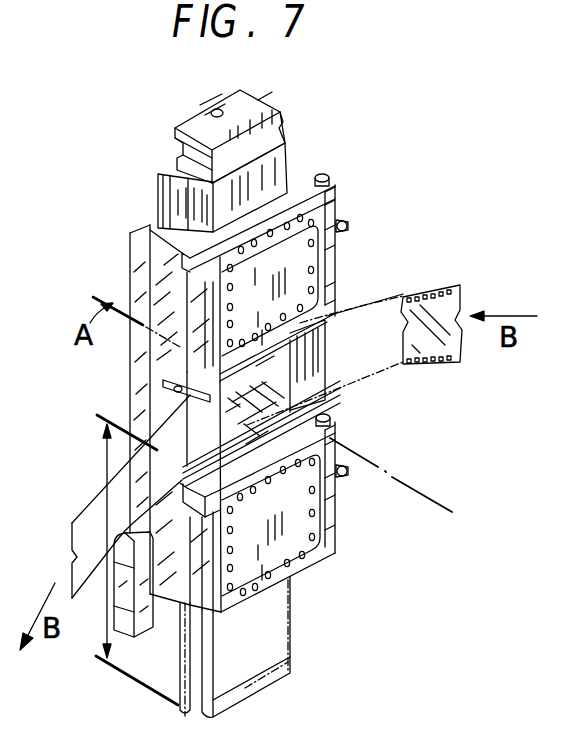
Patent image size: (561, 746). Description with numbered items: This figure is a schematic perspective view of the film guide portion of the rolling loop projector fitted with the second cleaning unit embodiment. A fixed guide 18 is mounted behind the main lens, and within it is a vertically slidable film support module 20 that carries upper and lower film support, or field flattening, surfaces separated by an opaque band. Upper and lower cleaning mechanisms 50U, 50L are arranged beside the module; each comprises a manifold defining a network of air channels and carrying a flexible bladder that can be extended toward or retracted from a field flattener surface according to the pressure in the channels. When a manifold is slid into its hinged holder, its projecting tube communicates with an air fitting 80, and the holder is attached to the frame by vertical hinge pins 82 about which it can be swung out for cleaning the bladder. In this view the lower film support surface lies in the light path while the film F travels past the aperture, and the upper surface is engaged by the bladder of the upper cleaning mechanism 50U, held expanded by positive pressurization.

The fixed guide 18 is at (133, 357).
The film support module 20 is at (283, 104).
The upper cleaning mechanism 50U is at (338, 267).
The lower cleaning mechanism 50L is at (338, 524).
The air fitting 80 is at (344, 221).
The vertical hinge pins 82 is at (327, 174).
The film F is at (436, 287).